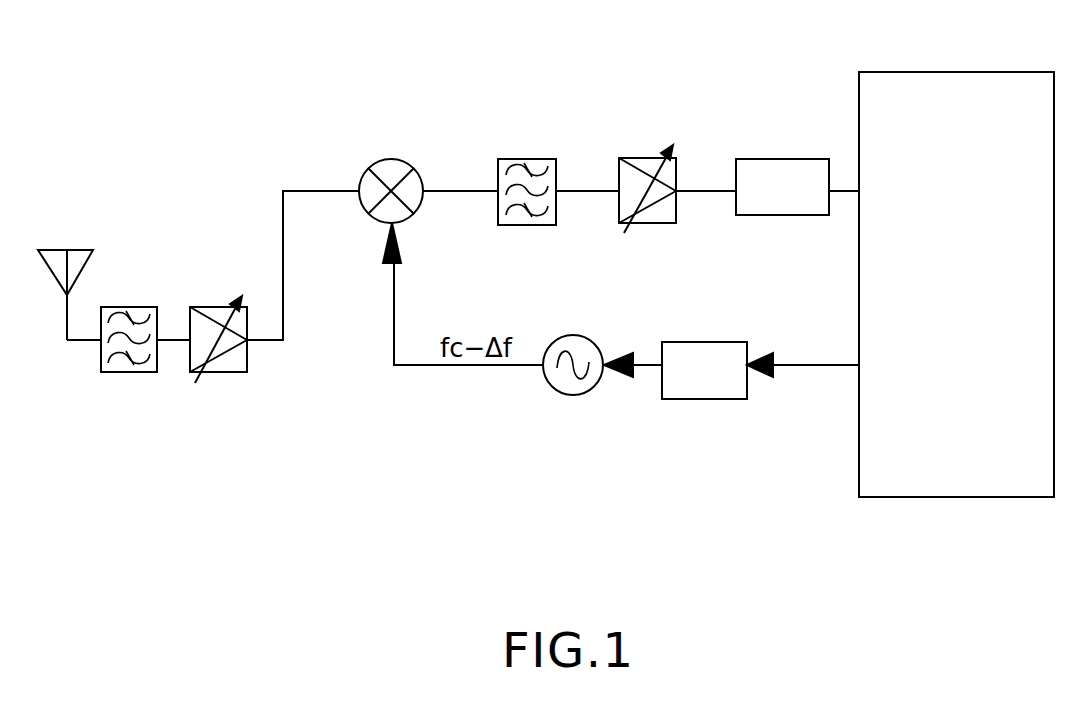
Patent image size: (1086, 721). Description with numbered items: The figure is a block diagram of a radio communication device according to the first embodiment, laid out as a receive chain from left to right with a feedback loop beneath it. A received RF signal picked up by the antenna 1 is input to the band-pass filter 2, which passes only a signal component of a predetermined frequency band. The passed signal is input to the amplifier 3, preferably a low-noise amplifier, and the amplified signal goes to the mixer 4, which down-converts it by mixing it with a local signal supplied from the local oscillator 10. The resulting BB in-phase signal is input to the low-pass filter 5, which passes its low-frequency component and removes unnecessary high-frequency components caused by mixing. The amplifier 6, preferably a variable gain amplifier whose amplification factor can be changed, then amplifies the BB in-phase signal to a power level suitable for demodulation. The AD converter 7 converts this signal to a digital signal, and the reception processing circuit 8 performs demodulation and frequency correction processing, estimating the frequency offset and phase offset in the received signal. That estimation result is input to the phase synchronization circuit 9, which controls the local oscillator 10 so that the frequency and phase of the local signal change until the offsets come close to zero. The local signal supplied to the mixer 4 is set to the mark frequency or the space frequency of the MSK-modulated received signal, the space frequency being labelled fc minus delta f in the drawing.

The antenna 1 is at (78, 248).
The band-pass filter 2 is at (135, 306).
The amplifier 3 is at (227, 372).
The mixer 4 is at (407, 157).
The low-pass filter 5 is at (525, 159).
The amplifier 6 is at (650, 153).
The AD converter 7 is at (773, 158).
The reception processing circuit 8 is at (942, 70).
The phase synchronization circuit 9 is at (717, 399).
The local oscillator 10 is at (580, 395).